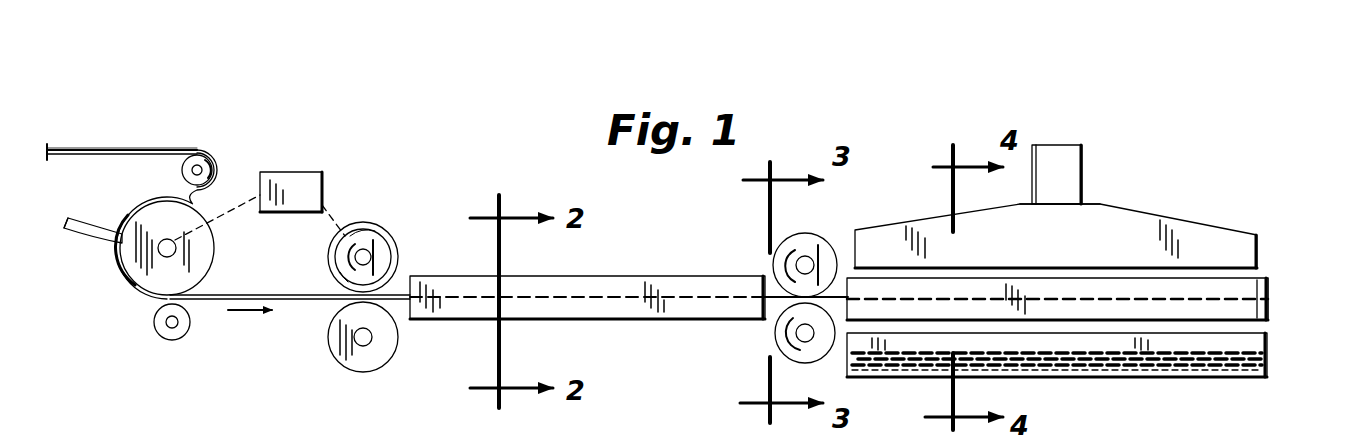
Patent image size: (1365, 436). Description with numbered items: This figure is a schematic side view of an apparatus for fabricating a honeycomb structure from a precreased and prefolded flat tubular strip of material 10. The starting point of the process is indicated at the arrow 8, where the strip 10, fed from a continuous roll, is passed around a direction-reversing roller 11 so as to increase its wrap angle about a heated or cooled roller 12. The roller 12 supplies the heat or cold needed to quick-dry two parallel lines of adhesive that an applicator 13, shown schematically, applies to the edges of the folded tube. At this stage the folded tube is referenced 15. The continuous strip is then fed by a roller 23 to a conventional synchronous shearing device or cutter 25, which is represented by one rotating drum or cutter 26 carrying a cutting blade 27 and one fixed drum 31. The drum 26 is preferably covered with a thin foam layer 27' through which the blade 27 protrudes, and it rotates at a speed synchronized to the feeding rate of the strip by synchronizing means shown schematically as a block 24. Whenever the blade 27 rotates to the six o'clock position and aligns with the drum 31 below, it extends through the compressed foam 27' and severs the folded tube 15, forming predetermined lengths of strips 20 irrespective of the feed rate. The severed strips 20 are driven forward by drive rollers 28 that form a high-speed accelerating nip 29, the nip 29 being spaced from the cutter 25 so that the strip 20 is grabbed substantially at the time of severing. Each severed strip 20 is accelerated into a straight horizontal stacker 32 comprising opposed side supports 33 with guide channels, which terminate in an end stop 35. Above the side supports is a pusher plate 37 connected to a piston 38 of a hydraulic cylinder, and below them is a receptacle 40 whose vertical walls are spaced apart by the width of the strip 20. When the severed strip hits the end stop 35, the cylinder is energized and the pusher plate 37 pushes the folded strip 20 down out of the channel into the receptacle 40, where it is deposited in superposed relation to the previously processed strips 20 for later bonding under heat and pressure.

The arrow 8 is at (103, 143).
The flat tubular strip of material 10 is at (187, 100).
The direction-reversing roller 11 is at (212, 152).
The heated or cooled roller 12 is at (153, 280).
The applicator 13 is at (64, 230).
The folded tube 15 is at (268, 285).
The severed strip 20 is at (560, 290).
The roller 23 is at (164, 338).
The synchronizing means 24 is at (282, 172).
The synchronous shearing device or cutter 25 is at (335, 166).
The rotating drum or cutter 26 is at (392, 257).
The cutting blade 27 is at (308, 308).
The thin foam layer 27' is at (399, 191).
The drive rollers 28 is at (792, 236).
The accelerating nip 29 is at (764, 275).
The fixed drum 31 is at (340, 363).
The stacker 32 is at (1132, 205).
The side supports 33 is at (1240, 296).
The end stop 35 is at (1270, 302).
The pusher plate 37 is at (1160, 225).
The piston 38 is at (1084, 168).
The receptacle 40 is at (1268, 356).